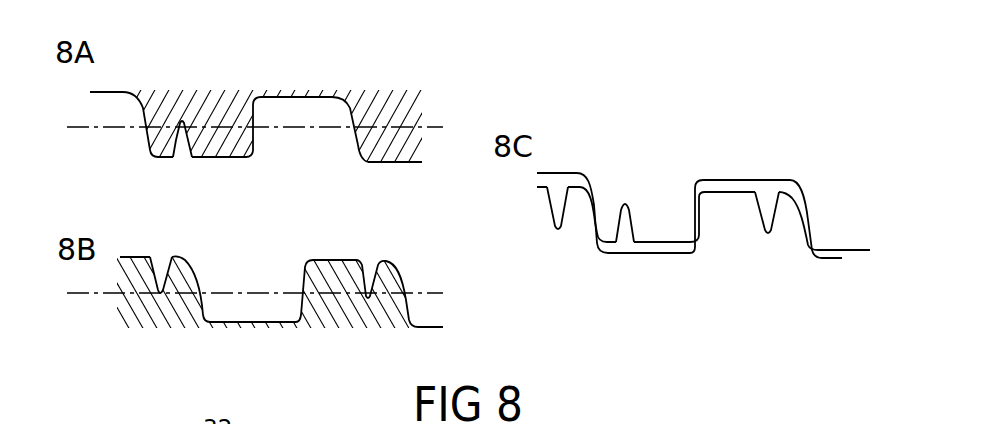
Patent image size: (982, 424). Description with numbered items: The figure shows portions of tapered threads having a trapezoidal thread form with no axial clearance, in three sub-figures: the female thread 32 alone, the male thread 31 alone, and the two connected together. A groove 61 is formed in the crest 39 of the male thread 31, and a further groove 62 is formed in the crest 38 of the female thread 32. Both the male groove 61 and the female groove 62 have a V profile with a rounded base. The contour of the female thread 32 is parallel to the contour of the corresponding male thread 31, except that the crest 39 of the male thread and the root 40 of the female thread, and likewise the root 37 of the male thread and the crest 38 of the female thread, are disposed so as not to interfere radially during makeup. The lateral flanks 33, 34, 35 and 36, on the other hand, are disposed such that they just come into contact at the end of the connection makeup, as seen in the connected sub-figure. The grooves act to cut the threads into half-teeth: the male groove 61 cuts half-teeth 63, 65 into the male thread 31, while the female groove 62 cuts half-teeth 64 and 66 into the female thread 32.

The male thread 31 is at (160, 318).
The female thread 32 is at (213, 103).
The lateral flank 33 is at (298, 306).
The lateral flank 34 is at (280, 152).
The lateral flank 35 is at (200, 278).
The lateral flank 36 is at (357, 155).
The root of the male thread 37 is at (243, 320).
The crest of the female thread 38 is at (370, 163).
The crest of the male thread 39 is at (320, 258).
The root of the female thread 40 is at (103, 97).
The male groove 61 is at (158, 287).
The female groove 62 is at (183, 150).
The half-tooth of the male thread 63 is at (723, 208).
The half-tooth of the female thread 64 is at (693, 175).
The half-tooth of the male thread 65 is at (788, 217).
The half-tooth of the female thread 66 is at (607, 227).